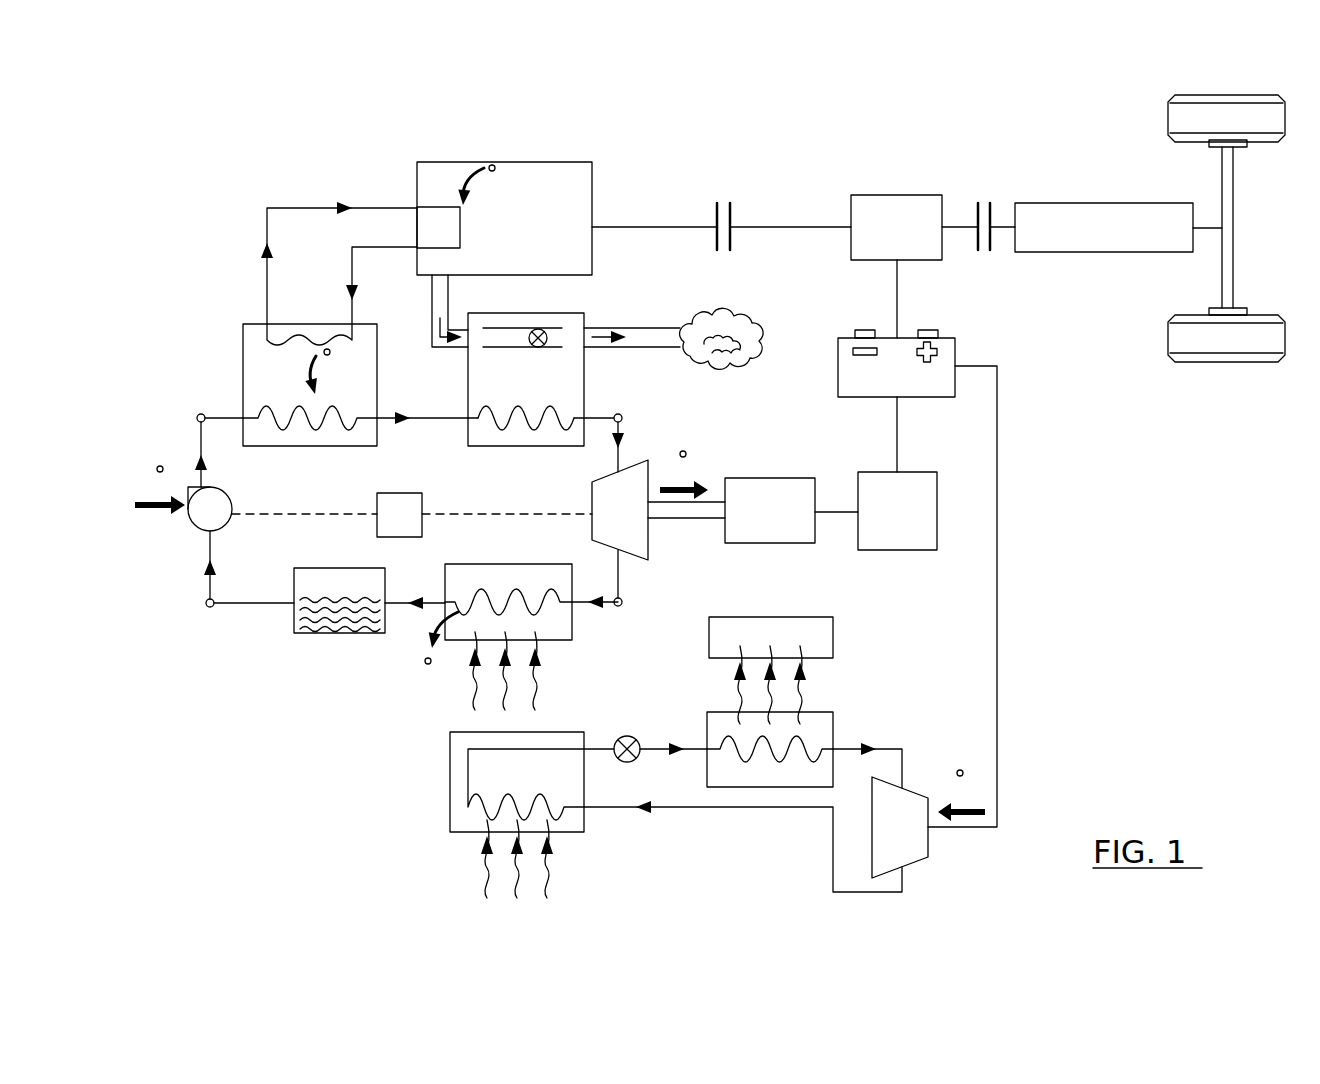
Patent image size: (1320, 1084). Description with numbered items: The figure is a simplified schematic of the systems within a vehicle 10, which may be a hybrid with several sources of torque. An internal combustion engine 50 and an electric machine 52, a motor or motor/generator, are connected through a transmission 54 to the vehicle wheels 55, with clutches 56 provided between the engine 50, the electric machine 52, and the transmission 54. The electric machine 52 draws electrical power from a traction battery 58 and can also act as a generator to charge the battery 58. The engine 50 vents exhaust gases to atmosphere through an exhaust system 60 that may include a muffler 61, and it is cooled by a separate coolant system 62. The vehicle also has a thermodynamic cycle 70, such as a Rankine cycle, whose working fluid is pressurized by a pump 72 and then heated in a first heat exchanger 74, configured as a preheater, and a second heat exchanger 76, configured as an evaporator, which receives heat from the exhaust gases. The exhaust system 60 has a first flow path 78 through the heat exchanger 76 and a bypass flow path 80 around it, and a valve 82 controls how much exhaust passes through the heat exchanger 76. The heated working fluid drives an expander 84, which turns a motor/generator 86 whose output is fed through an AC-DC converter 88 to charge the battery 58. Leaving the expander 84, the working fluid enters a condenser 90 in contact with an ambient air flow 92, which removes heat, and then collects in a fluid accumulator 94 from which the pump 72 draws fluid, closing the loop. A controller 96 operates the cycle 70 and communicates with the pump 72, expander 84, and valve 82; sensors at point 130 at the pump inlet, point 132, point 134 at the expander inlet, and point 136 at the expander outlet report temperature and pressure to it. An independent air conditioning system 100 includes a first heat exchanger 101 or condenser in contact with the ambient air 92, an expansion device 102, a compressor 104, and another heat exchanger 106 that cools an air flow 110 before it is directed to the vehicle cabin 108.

The vehicle 10 is at (315, 806).
The internal combustion engine 50 is at (592, 185).
The electric machine 52 is at (862, 195).
The transmission 54 is at (1097, 203).
The vehicle wheels 55 is at (1185, 362).
The clutches 56 is at (722, 203).
The traction battery 58 is at (838, 358).
The exhaust system 60 is at (594, 360).
The muffler 61 is at (548, 313).
The coolant system 62 is at (300, 207).
The thermodynamic cycle 70 is at (200, 680).
The pump 72 is at (226, 527).
The first heat exchanger 74 is at (332, 446).
The second heat exchanger 76 is at (478, 420).
The first flow path 78 is at (508, 446).
The bypass flow path 80 is at (505, 349).
The valve 82 is at (546, 350).
The expander 84 is at (642, 462).
The motor/generator 86 is at (768, 478).
The AC-DC converter 88 is at (937, 500).
The condenser 90 is at (498, 564).
The ambient air flow 92 is at (572, 692).
The fluid accumulator 94 is at (335, 633).
The controller 96 is at (412, 515).
The air conditioning system 100 is at (704, 848).
The first heat exchanger 101 is at (450, 807).
The expansion device 102 is at (622, 736).
The compressor 104 is at (915, 790).
The heat exchanger 106 is at (834, 732).
The vehicle cabin 108 is at (778, 617).
The air flow 110 is at (723, 687).
The point 130 is at (238, 584).
The node 132 is at (209, 438).
The point 134 is at (621, 404).
The point 136 is at (625, 615).